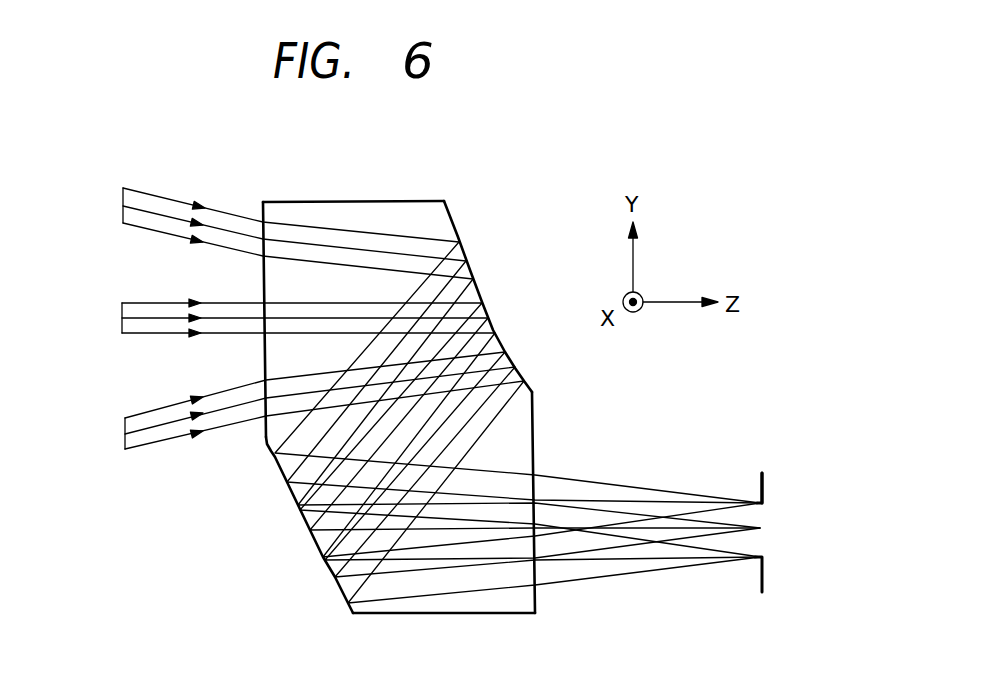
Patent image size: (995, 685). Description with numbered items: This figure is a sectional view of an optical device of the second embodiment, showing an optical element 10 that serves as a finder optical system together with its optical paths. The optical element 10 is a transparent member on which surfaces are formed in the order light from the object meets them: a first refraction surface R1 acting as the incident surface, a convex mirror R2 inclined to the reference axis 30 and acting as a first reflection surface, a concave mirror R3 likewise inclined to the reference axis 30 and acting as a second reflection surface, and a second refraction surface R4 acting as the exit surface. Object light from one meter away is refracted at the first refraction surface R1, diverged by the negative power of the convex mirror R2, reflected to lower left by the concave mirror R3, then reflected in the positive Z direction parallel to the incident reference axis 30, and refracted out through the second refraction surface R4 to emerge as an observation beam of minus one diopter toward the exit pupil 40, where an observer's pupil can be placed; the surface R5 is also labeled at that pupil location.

The optical element 10 is at (493, 326).
The reference axis 30 is at (123, 312).
The exit pupil 40 is at (764, 571).
The first refraction surface R1 is at (262, 207).
The convex mirror R2 is at (450, 215).
The concave mirror R3 is at (327, 568).
The second refraction surface R4 is at (537, 597).
The image surface R5 is at (763, 492).